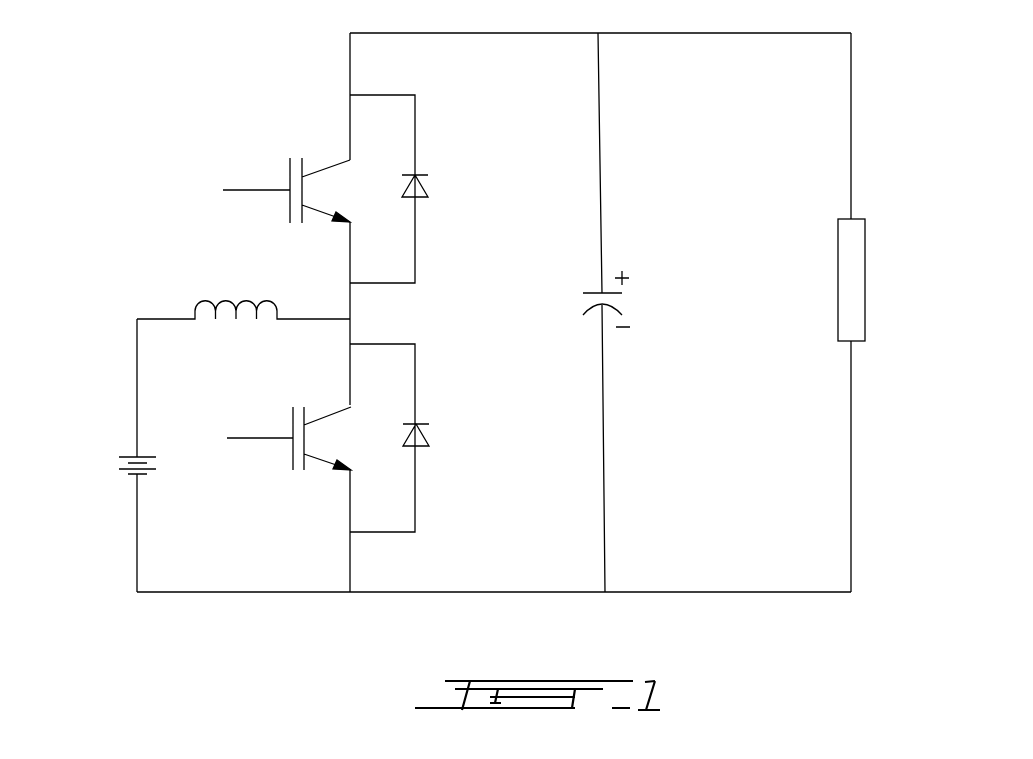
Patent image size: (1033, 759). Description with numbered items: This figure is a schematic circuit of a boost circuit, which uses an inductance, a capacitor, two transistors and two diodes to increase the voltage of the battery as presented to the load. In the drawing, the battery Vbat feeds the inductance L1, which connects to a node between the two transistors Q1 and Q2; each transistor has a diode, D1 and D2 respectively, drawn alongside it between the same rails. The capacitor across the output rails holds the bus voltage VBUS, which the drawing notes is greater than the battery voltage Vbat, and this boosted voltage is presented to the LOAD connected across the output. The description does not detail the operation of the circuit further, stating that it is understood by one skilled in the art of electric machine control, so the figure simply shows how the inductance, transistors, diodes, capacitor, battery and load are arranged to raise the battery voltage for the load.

The upper switching transistor (IGBT) Q1 is at (286, 190).
The lower switching transistor (IGBT) Q2 is at (289, 438).
The upper freewheeling diode D1 is at (406, 189).
The lower freewheeling diode D2 is at (408, 438).
The inductor L1 is at (243, 292).
The battery voltage source Vbat is at (96, 459).
The DC bus capacitor / bus voltage VBUS is at (695, 302).
The load LOAD is at (888, 280).